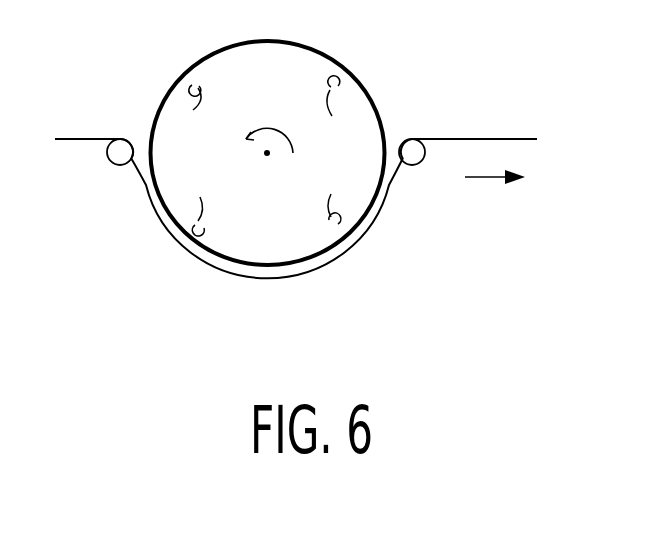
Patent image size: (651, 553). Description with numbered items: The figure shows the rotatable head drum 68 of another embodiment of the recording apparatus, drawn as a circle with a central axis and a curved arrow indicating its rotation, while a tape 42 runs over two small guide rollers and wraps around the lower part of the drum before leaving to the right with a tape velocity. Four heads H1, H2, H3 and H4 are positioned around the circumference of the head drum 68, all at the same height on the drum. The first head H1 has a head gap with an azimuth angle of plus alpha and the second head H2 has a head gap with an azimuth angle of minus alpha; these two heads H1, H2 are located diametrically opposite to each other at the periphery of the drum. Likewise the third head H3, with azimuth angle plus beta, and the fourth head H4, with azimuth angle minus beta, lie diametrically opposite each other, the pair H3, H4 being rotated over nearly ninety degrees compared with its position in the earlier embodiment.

The magnetic tape 42 is at (461, 148).
The head drum 68 is at (238, 252).
The first head H1 is at (195, 113).
The second head H2 is at (338, 194).
The third head H3 is at (342, 112).
The fourth head H4 is at (207, 202).